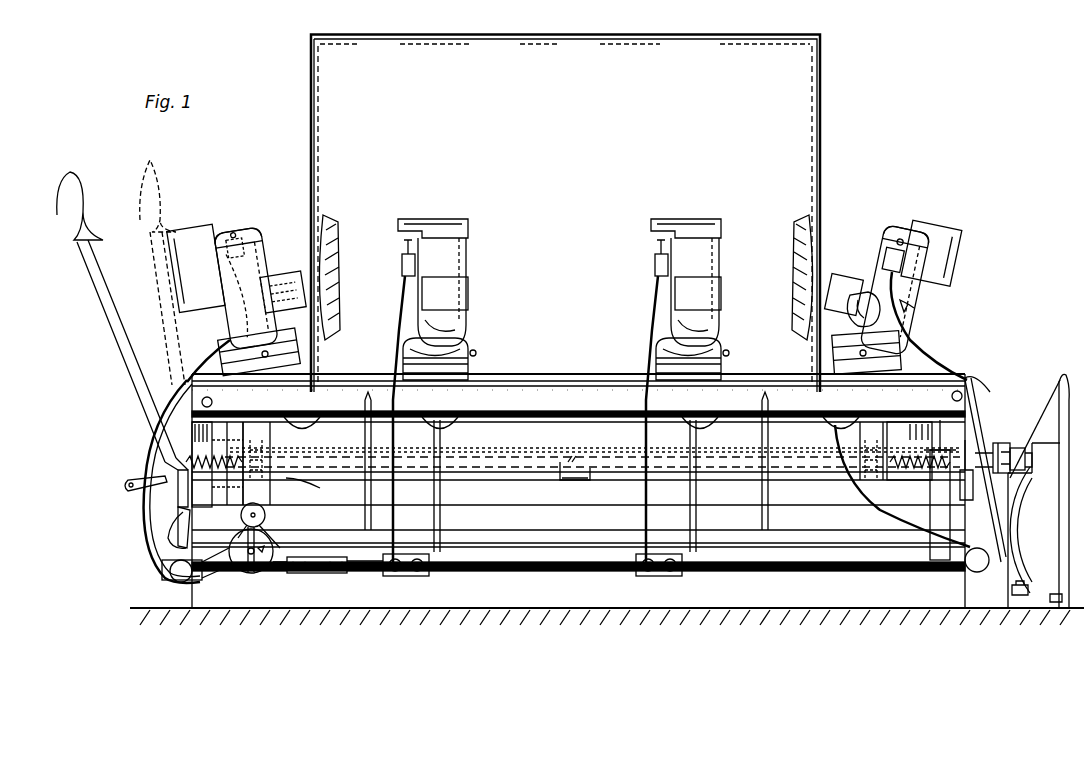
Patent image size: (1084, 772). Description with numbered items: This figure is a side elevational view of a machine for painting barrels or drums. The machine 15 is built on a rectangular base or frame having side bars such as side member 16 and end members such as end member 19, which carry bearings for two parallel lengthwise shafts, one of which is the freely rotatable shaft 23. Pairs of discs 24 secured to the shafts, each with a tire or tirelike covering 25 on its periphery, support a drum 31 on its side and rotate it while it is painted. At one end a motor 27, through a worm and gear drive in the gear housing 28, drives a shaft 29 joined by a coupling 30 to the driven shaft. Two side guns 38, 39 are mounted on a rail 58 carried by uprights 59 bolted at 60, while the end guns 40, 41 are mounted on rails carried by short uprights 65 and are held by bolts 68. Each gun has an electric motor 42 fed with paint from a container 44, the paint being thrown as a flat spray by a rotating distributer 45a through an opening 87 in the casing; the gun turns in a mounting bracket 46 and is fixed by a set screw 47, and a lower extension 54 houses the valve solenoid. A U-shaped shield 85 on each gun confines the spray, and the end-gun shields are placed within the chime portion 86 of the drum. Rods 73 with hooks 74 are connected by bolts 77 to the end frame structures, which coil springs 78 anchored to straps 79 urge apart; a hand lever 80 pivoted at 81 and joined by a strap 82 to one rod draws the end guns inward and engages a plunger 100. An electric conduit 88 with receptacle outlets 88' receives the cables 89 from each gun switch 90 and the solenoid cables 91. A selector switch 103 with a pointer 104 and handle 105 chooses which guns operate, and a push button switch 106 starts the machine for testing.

The base or frame 15 is at (170, 604).
The side bar or member 16 is at (578, 491).
The end member 19 is at (940, 520).
The shaft 23 is at (796, 456).
The disc or wheel 24 is at (365, 431).
The tire or tirelike covering 25 is at (365, 515).
The motor 27 is at (1035, 525).
The gear casing or housing 28 is at (1060, 382).
The shaft 29 is at (1026, 448).
The coupling 30 is at (1000, 443).
The drum 31 is at (790, 150).
The gun 38 is at (432, 315).
The gun 39 is at (716, 322).
The gun 40 is at (240, 215).
The gun 41 is at (922, 221).
The electric motor 42 is at (215, 242).
The container or receptacle 44 is at (218, 290).
The rotating distributer 45a is at (908, 308).
The mounting bracket 46 is at (300, 345).
The set screw 47 is at (260, 353).
The extension 54 is at (312, 420).
The support or rail 58 is at (552, 398).
The upright 59 is at (935, 428).
The bolt 60 is at (202, 402).
The short upright 65 is at (563, 461).
The bolt 68 is at (565, 460).
The rod 73 is at (495, 460).
The hook 74 is at (562, 478).
The bolt 77 is at (565, 457).
The coil spring 78 is at (186, 446).
The strap 79 is at (178, 485).
The hand lever 80 is at (108, 315).
The pivot 81 is at (158, 190).
The strap 82 is at (126, 482).
The U-shaped shield 85 is at (286, 280).
The chime portion 86 is at (328, 232).
The opening 87 is at (855, 292).
The electric conduit 88 is at (589, 579).
The receptacle outlet 88' is at (532, 581).
The cable or conductor 89 is at (146, 518).
The switch 90 is at (240, 240).
The cable 91 is at (320, 488).
The plunger 100 is at (183, 518).
The selector switch means 103 is at (245, 572).
The pointer 104 is at (250, 550).
The operating handle 105 is at (262, 578).
The push button switch 106 is at (266, 516).